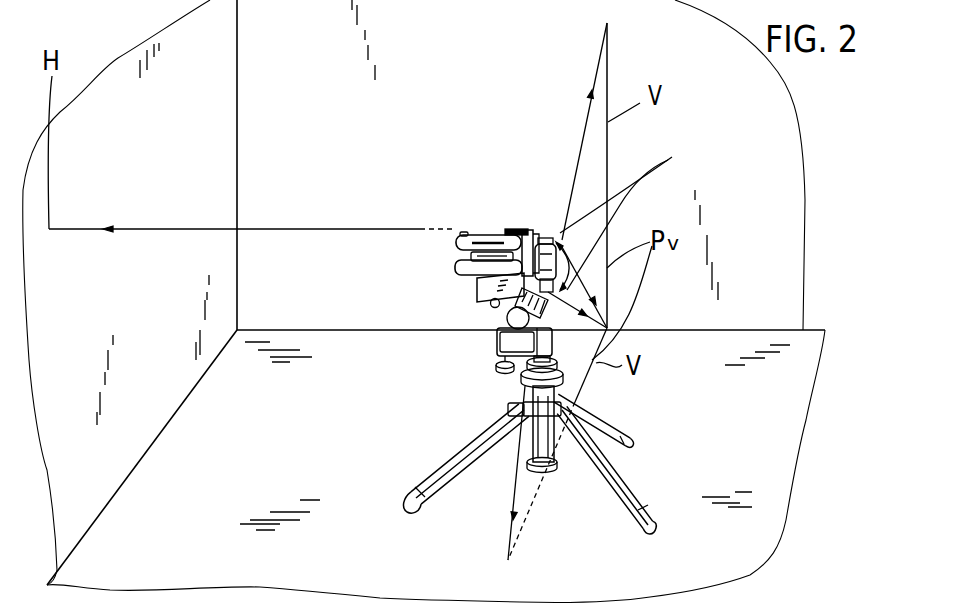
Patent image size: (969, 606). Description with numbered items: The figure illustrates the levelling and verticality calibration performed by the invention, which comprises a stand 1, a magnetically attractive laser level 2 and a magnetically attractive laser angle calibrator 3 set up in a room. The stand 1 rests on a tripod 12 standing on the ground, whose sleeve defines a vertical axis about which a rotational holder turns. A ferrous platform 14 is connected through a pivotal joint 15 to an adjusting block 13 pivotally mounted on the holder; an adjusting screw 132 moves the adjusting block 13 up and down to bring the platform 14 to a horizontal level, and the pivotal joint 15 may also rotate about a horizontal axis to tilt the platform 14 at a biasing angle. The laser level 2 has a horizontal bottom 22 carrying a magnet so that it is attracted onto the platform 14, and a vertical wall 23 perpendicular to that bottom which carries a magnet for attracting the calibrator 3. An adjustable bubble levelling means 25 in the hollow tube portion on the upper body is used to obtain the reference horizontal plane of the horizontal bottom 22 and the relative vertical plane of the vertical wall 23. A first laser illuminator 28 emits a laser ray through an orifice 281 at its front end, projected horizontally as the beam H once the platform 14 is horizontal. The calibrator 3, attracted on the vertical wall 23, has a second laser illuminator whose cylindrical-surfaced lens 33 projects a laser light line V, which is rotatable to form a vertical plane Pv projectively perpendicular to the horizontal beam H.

The stand 1 is at (488, 363).
The tripod 12 is at (620, 480).
The adjusting block 13 is at (496, 345).
The adjusting screw 132 is at (501, 372).
The platform 14 is at (478, 293).
The pivotal joint 15 is at (496, 324).
The magnetically attractive laser level 2 is at (445, 270).
The horizontal bottom 22 is at (476, 279).
The vertical wall 23 is at (537, 228).
The adjustable bubble levelling means 25 is at (487, 240).
The first laser illuminator 28 is at (523, 229).
The orifice 281 is at (490, 234).
The magnetically attractive laser angle calibrator 3 is at (543, 238).
The cylindrical-surfaced lens 33 is at (603, 195).